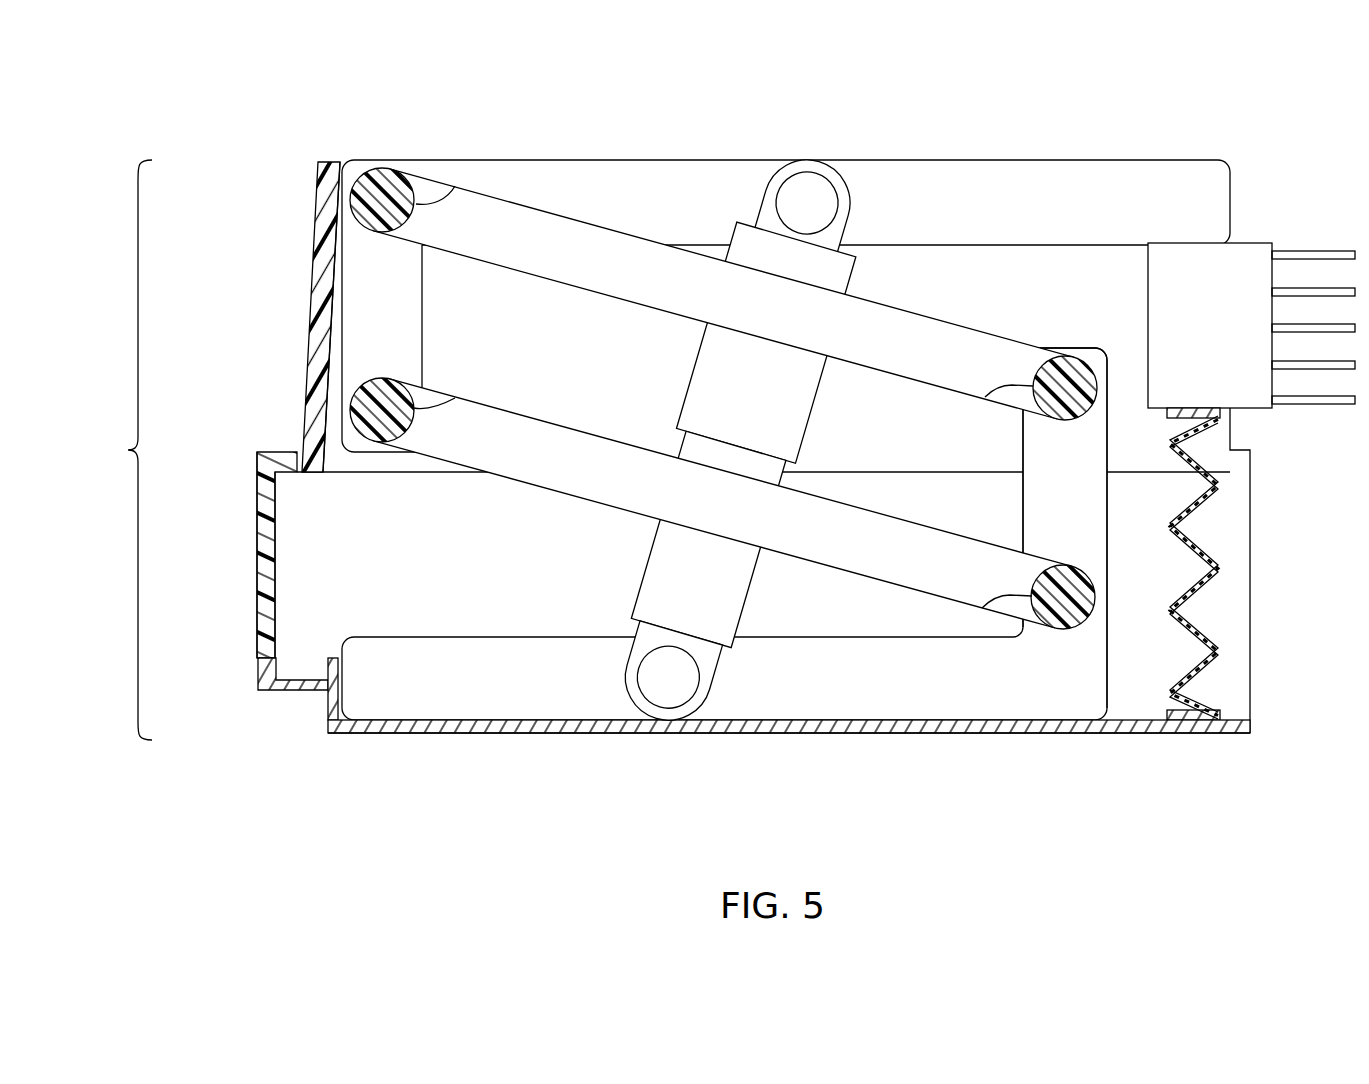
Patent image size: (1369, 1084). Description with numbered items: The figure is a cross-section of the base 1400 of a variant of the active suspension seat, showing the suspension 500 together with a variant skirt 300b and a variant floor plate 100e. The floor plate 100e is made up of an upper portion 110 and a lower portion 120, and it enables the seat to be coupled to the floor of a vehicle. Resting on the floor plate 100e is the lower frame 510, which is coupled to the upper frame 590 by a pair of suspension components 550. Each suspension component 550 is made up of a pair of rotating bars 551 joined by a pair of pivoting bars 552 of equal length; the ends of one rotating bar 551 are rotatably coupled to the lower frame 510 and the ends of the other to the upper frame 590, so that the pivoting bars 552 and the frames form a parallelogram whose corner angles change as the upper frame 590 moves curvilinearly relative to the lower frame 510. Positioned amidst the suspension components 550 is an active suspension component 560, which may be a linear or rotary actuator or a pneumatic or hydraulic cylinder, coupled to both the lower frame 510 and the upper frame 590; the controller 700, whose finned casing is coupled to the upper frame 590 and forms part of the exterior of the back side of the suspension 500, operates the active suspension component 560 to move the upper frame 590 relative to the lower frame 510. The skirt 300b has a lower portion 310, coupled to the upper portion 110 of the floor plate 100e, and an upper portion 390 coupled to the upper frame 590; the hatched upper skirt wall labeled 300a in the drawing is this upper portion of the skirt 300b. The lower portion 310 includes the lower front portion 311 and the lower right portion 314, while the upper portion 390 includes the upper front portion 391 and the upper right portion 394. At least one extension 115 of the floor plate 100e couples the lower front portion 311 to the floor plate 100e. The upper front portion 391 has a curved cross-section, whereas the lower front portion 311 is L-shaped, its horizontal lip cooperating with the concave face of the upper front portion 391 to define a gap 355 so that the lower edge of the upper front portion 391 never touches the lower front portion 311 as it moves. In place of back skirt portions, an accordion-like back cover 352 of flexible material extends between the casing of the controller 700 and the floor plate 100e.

The base 1400 is at (97, 450).
The suspension 500 is at (880, 137).
The rotating bars 551 is at (442, 184).
The suspension components 550 is at (626, 277).
The pivoting bars 552 is at (960, 326).
The active suspension component 560 is at (776, 400).
The upper frame 590 is at (1021, 215).
The upper right portion 394 is at (1116, 277).
The controller 700 is at (1229, 339).
The back cover 352 is at (1215, 549).
The lower right portion 314 is at (349, 545).
The lower frame 510 is at (1001, 690).
The upper wall 300a is at (322, 222).
The skirt 300b is at (258, 489).
The upper front portion 391 is at (320, 263).
The upper portion 390 is at (337, 347).
The gap 355 is at (296, 434).
The lower portion 310 is at (280, 598).
The lower front portion 311 is at (258, 579).
The extension 115 is at (302, 692).
The upper portion 110 is at (331, 698).
The lower portion 120 is at (592, 734).
The floor plate 100e is at (712, 736).